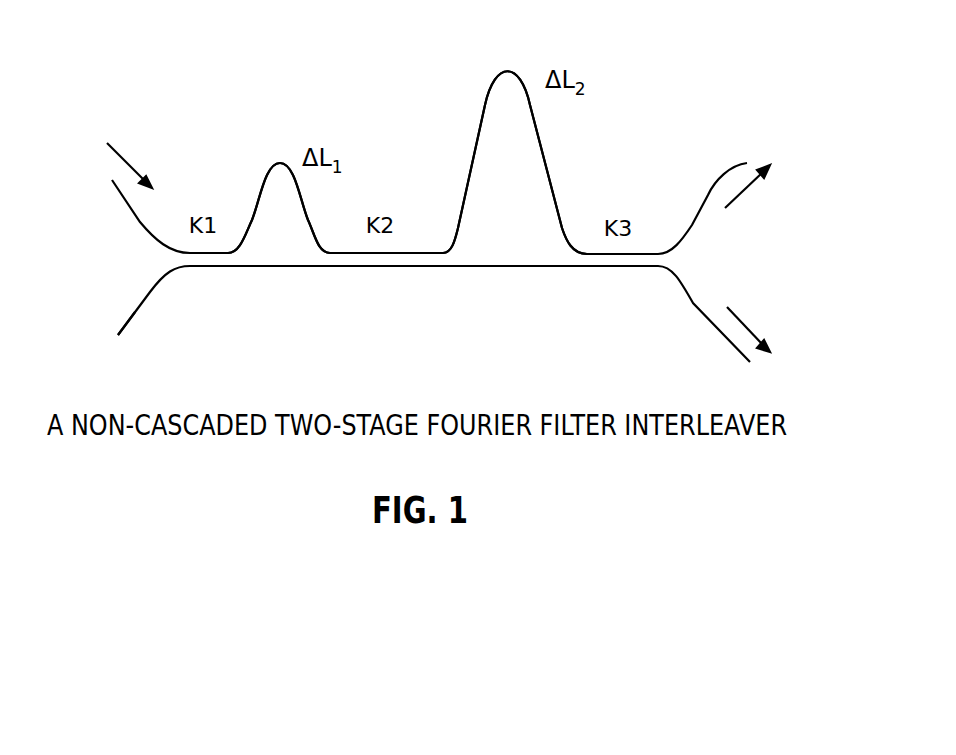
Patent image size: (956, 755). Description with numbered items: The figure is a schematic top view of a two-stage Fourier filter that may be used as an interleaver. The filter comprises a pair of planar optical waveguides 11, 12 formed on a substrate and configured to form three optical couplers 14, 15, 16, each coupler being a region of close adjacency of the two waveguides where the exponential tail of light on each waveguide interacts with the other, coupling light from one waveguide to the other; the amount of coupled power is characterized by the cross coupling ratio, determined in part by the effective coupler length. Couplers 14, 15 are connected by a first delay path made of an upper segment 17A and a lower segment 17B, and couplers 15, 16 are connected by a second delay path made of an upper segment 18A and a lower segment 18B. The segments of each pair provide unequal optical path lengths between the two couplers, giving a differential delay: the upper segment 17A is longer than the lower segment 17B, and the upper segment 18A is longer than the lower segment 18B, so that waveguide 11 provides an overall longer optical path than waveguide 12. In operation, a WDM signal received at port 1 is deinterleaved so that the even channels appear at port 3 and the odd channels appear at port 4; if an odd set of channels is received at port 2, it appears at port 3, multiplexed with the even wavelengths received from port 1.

The port 1 is at (123, 169).
The port 2 is at (114, 322).
The port 3 is at (747, 170).
The port 4 is at (748, 352).
The planar optical waveguide 11 is at (132, 212).
The planar optical waveguide 12 is at (145, 298).
The optical coupler 14 is at (217, 249).
The optical coupler 15 is at (408, 252).
The optical coupler 16 is at (637, 253).
The upper segment 17A is at (280, 162).
The lower segment 17B is at (285, 266).
The upper segment 18A is at (510, 72).
The lower segment 18B is at (520, 266).